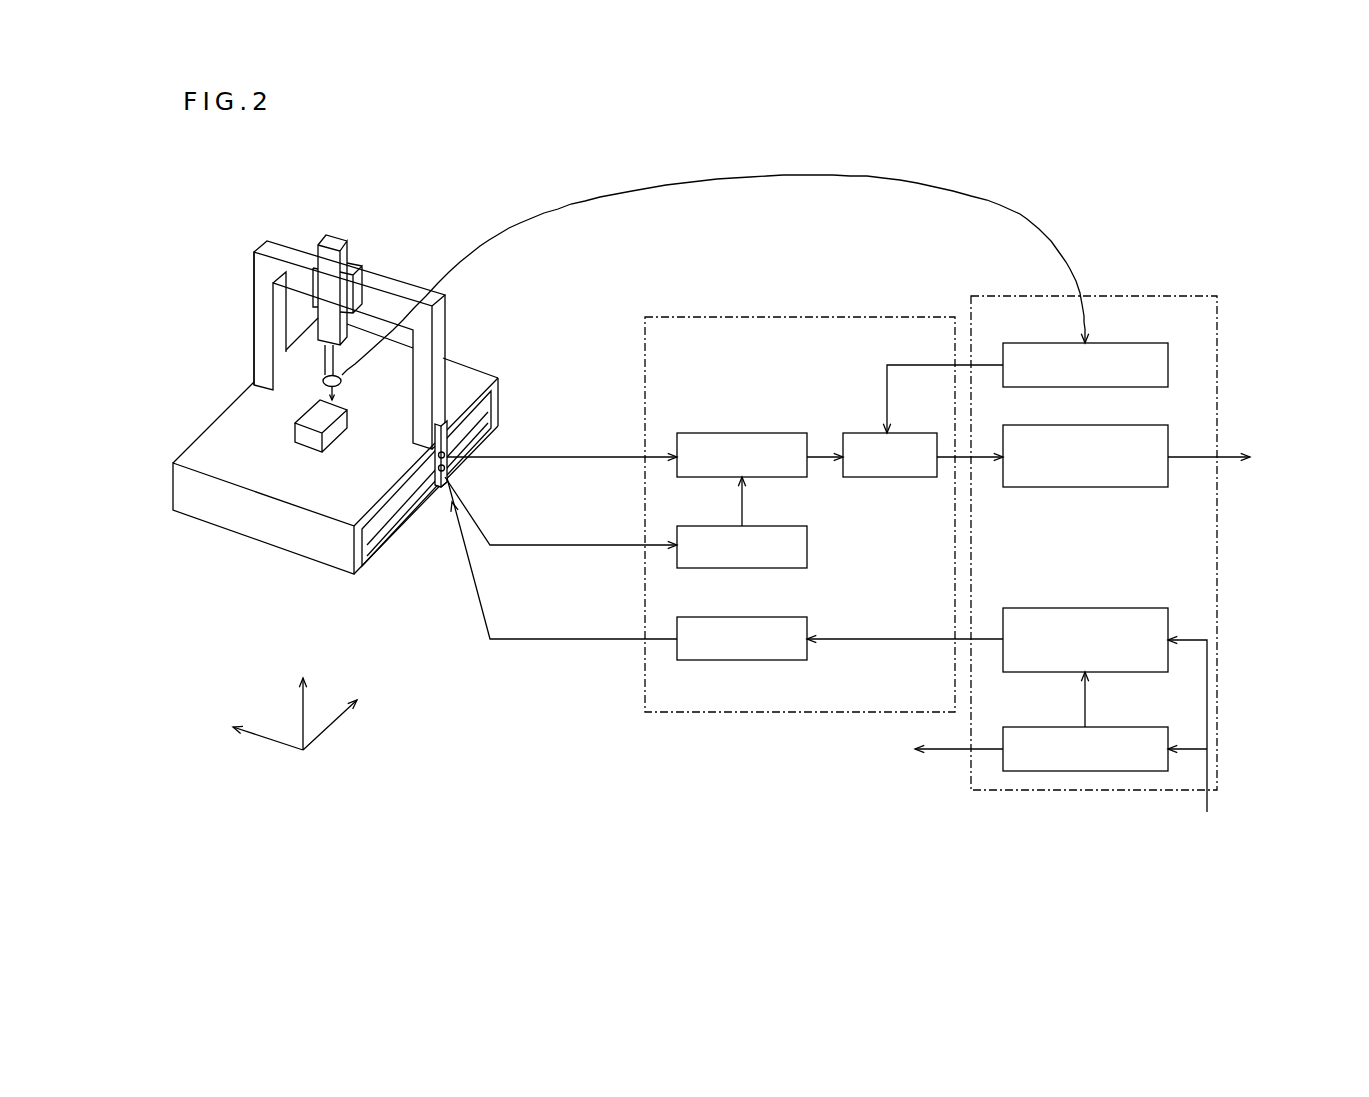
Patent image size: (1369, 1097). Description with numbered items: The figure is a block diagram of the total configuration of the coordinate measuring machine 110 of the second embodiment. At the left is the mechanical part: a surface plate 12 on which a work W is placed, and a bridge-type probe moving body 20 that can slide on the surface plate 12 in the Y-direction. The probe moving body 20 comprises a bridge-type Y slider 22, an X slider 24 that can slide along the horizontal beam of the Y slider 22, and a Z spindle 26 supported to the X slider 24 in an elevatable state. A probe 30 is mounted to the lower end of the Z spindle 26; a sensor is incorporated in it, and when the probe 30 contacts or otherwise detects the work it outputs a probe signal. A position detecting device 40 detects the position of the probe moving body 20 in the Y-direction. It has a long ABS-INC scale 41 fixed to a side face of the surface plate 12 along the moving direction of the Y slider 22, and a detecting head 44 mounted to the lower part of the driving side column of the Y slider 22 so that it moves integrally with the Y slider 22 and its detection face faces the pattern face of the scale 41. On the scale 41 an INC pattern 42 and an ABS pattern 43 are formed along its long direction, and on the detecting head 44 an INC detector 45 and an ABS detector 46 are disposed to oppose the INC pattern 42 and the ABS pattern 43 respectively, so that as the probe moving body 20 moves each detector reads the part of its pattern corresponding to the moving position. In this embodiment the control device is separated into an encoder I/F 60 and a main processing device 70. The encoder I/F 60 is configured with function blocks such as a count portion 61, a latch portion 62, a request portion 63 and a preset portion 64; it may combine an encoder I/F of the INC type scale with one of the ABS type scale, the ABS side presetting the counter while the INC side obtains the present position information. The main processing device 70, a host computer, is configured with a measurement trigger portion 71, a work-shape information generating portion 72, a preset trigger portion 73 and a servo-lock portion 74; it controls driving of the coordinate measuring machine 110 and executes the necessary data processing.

The coordinate measuring machine 110 is at (595, 158).
The probe moving body 20 is at (287, 253).
The Y slider 22 is at (253, 298).
The X slider 24 is at (355, 272).
The Z spindle 26 is at (333, 365).
The probe 30 is at (328, 392).
The surface plate 12 is at (228, 440).
The workpiece W is at (292, 428).
The position detecting device 40 is at (537, 357).
The ABS-INC scale 41 is at (352, 548).
The INC pattern 42 is at (482, 395).
The ABS pattern 43 is at (500, 430).
The detecting head 44 is at (427, 452).
The INC detector 45 is at (437, 423).
The ABS detector 46 is at (430, 490).
The encoder I/F 60 is at (746, 317).
The count portion 61 is at (743, 433).
The latch portion 62 is at (918, 433).
The request portion 63 is at (803, 617).
The preset portion 64 is at (803, 526).
The main processing device 70 is at (1146, 296).
The measurement trigger portion 71 is at (1132, 343).
The work-shape information generating portion 72 is at (1132, 425).
The preset trigger portion 73 is at (1132, 608).
The servo-lock portion 74 is at (1132, 727).